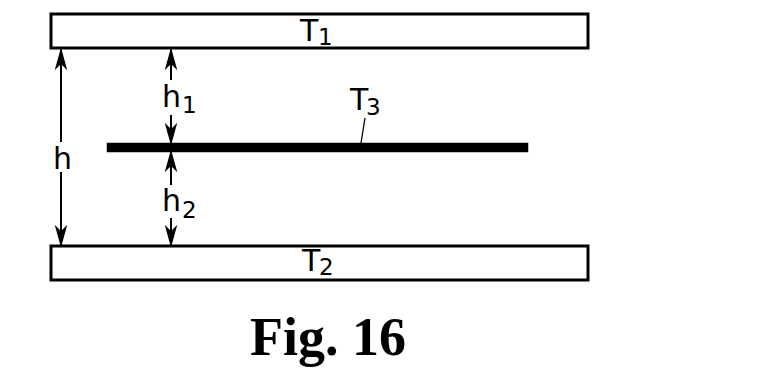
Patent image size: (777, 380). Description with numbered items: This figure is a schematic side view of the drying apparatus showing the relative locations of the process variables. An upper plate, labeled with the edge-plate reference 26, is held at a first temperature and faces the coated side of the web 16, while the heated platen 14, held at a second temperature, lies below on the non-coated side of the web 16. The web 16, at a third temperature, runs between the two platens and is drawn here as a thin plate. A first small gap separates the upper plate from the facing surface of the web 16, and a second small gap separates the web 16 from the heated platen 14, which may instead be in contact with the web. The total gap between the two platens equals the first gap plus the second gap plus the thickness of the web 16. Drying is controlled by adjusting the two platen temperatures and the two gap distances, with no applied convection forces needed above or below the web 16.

The edge plates 26 is at (570, 35).
The heated platen 14 is at (579, 262).
The coated web 16 is at (483, 146).